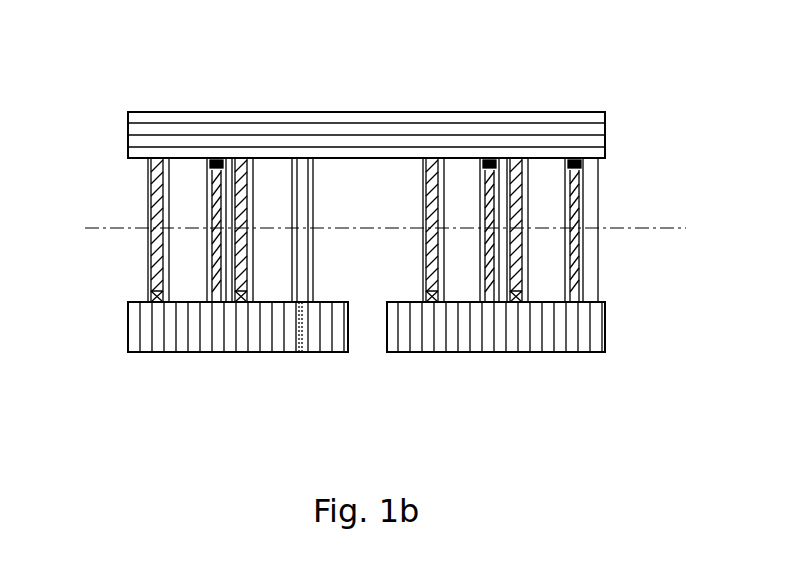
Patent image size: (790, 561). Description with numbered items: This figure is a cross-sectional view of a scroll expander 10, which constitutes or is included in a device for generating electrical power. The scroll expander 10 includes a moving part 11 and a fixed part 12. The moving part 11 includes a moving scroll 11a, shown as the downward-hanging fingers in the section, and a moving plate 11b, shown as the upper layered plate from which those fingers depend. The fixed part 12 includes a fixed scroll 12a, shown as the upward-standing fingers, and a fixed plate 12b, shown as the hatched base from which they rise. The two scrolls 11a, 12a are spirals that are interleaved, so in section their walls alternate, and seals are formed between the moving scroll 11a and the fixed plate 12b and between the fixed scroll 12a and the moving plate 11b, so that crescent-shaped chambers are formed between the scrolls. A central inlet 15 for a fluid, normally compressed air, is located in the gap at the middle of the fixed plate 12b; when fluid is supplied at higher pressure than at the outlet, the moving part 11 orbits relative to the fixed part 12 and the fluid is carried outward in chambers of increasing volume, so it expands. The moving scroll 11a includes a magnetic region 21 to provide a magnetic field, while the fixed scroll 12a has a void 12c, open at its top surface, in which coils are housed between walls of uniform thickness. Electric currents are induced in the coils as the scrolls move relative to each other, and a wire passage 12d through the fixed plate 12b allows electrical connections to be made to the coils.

The scroll expander 10 is at (140, 46).
The moving part 11 is at (64, 155).
The moving scroll 11a is at (150, 205).
The moving plate 11b is at (134, 150).
The fixed part 12 is at (673, 268).
The fixed scroll 12a is at (598, 290).
The fixed plate 12b is at (605, 326).
The void 12c is at (305, 197).
The wire passage 12d is at (301, 356).
The central inlet 15 is at (367, 348).
The magnetic region 21 is at (160, 262).